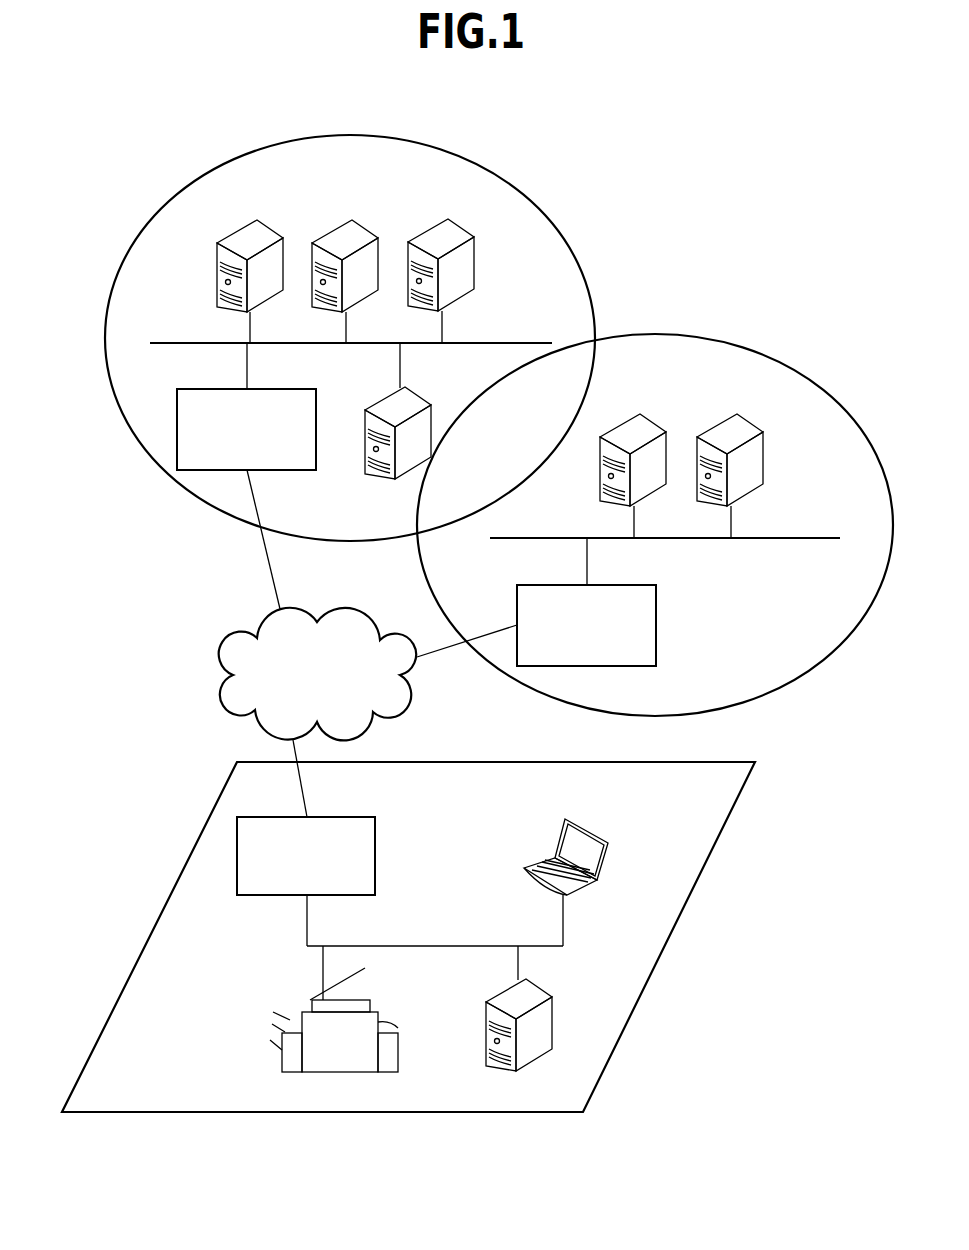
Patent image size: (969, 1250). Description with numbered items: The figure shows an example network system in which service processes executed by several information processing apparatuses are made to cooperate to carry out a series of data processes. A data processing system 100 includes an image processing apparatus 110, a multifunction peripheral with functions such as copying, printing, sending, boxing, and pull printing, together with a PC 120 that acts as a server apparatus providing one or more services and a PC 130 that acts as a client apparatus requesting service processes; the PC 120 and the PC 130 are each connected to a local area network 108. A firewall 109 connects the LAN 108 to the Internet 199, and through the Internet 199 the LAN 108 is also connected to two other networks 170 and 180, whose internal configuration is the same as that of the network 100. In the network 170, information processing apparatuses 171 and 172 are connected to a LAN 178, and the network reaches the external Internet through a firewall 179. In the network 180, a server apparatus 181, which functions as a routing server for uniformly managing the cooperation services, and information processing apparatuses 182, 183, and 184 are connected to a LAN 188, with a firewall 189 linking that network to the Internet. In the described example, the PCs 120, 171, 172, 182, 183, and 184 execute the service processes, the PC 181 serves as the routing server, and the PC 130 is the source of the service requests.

The data processing system 100 is at (483, 761).
The local area network 108 is at (425, 946).
The firewall 109 is at (315, 817).
The image processing apparatus 110 is at (388, 1028).
The PC 120 is at (540, 983).
The PC 130 is at (590, 822).
The network 170 is at (680, 334).
The information processing apparatus 171 is at (650, 414).
The information processing apparatus 172 is at (747, 414).
The LAN 178 is at (797, 538).
The firewall 179 is at (600, 585).
The network 180 is at (347, 135).
The server apparatus 181 is at (433, 431).
The information processing apparatus 182 is at (268, 222).
The information processing apparatus 183 is at (362, 222).
The information processing apparatus 184 is at (458, 221).
The LAN 188 is at (510, 343).
The firewall 189 is at (262, 389).
The Internet 199 is at (218, 657).